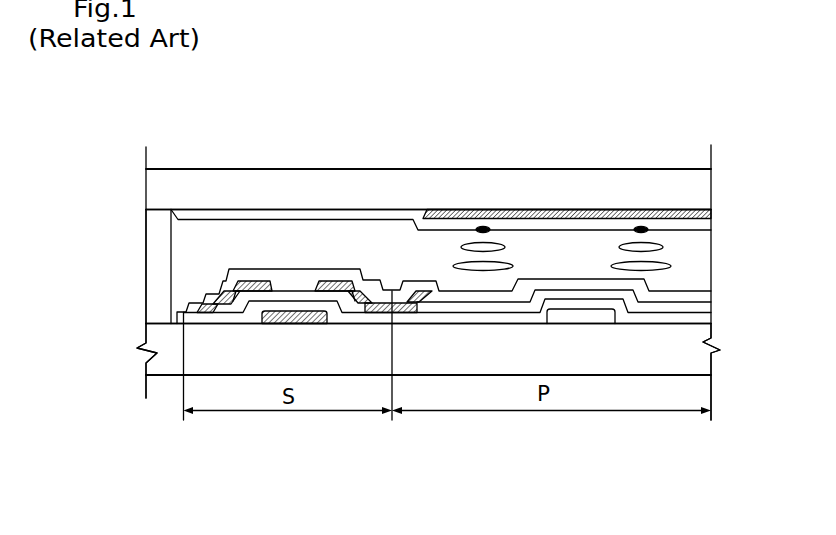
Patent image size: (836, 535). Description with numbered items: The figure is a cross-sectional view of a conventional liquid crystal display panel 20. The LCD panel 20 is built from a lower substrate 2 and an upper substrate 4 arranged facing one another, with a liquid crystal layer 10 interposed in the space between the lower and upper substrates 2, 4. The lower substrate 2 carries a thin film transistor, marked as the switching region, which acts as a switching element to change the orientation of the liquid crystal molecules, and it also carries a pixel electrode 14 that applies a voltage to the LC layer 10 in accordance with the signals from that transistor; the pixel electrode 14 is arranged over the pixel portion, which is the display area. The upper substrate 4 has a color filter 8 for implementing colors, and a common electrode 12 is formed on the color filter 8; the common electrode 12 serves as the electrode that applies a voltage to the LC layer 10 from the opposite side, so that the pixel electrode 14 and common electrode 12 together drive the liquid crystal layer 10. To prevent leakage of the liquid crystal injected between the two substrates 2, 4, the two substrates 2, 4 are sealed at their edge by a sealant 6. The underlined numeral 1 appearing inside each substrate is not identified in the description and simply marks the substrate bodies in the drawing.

The glass substrate 1 is at (454, 193).
The lower substrate 2 is at (722, 290).
The upper substrate 4 is at (722, 167).
The sealant 6 is at (152, 263).
The color filter 8 is at (600, 210).
The liquid crystal layer 10 is at (722, 228).
The common electrode 12 is at (689, 224).
The pixel electrode 14 is at (705, 305).
The LCD panel 20 is at (289, 161).